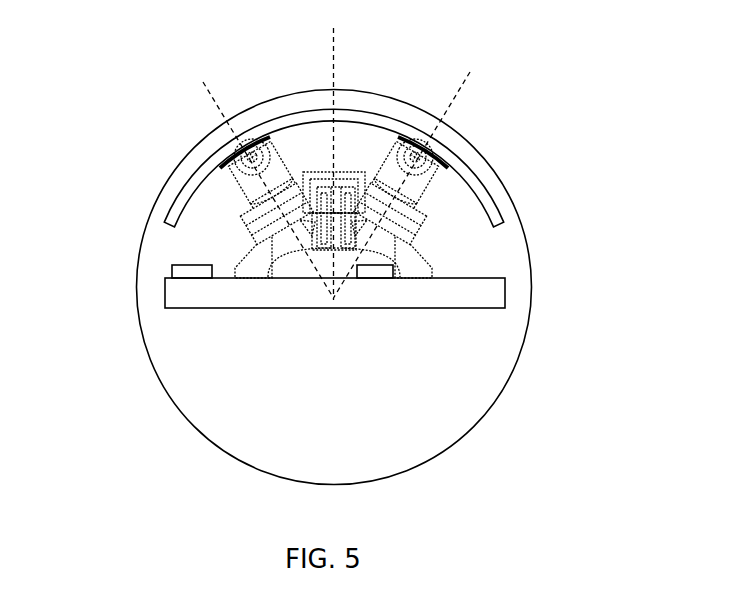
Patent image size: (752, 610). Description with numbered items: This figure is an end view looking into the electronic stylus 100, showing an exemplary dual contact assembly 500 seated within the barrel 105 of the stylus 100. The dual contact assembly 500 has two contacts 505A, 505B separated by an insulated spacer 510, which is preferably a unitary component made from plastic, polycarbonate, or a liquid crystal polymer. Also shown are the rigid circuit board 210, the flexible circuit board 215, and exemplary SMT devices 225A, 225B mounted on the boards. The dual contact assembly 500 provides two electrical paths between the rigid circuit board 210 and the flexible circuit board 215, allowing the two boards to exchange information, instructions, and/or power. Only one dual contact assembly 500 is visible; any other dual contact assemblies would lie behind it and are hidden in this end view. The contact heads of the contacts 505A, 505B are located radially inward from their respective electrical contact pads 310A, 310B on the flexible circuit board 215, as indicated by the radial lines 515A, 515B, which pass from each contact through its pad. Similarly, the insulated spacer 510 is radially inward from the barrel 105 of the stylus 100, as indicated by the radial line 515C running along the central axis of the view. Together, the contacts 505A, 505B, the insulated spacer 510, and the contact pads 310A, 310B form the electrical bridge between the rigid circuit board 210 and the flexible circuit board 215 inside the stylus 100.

The electronic stylus 100 is at (304, 287).
The barrel 105 is at (151, 214).
The rigid circuit board 210 is at (177, 308).
The flexible circuit board 215 is at (500, 230).
The SMT device 225A is at (180, 264).
The SMT device 225B is at (368, 279).
The electrical contact pad 310A is at (220, 169).
The electrical contact pad 310B is at (444, 168).
The dual contact assembly 500 is at (288, 262).
The contact 505A is at (247, 223).
The contact 505B is at (430, 228).
The insulated spacer 510 is at (320, 268).
The radial line 515A is at (203, 82).
The radial line 515B is at (472, 73).
The radial line 515C is at (334, 28).